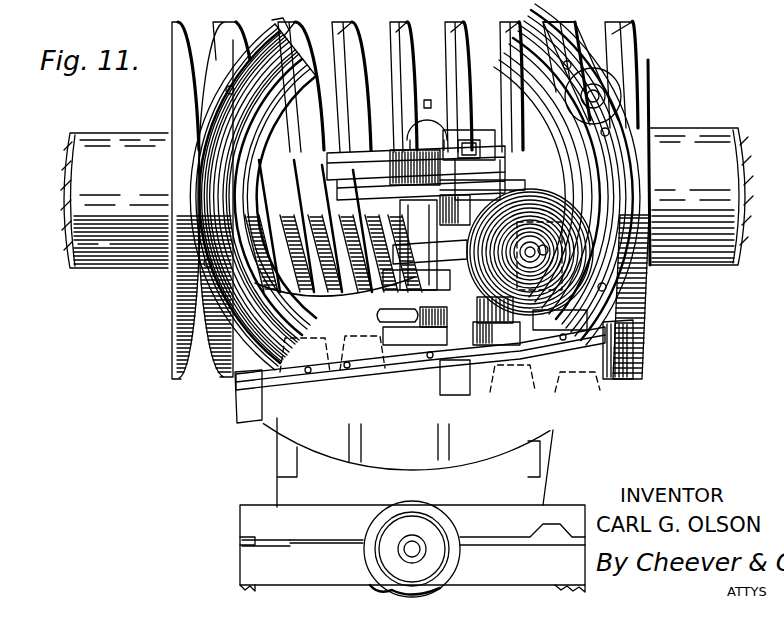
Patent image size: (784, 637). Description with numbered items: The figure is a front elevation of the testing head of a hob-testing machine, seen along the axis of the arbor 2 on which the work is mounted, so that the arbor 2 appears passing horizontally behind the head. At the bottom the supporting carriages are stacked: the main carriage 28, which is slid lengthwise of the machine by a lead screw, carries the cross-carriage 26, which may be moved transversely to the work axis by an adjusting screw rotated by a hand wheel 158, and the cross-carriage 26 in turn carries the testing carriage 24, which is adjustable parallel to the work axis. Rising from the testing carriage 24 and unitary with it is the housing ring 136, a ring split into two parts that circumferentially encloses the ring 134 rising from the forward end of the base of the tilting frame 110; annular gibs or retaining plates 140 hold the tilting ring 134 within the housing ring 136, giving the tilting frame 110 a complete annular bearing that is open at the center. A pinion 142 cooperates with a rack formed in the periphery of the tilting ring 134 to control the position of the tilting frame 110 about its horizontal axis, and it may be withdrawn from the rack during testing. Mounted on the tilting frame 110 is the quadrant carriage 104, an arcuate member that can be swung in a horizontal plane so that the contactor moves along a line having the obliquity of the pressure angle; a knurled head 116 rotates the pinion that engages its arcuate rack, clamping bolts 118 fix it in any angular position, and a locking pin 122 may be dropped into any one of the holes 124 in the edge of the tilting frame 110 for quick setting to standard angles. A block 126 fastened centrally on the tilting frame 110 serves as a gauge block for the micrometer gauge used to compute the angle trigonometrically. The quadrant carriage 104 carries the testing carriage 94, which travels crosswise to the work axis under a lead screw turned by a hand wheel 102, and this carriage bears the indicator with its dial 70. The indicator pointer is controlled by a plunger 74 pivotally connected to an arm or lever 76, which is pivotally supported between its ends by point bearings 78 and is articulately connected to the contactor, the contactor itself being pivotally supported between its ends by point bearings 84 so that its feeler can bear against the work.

The arbor 2 is at (690, 140).
The testing carriage 24 is at (508, 464).
The cross-carriage 26 is at (252, 506).
The main carriage 28 is at (262, 566).
The dial 70 is at (330, 165).
The plunger 74 is at (416, 173).
The arm or lever 76 is at (476, 72).
The point bearings 78 is at (457, 128).
The point bearings 84 is at (425, 100).
The testing carriage 94 is at (387, 280).
The hand wheel 102 is at (170, 230).
The quadrant carriage 104 is at (437, 282).
The tilting frame 110 is at (588, 386).
The knurled head 116 is at (653, 284).
The clamping bolts 118 is at (383, 314).
The locking pin 122 is at (607, 370).
The holes 124 is at (327, 376).
The block 126 is at (443, 358).
The ring 134 is at (283, 62).
The housing ring 136 is at (262, 62).
The annular gibs or retaining plates 140 is at (283, 50).
The pinion 142 is at (605, 90).
The hand wheel 158 is at (407, 508).